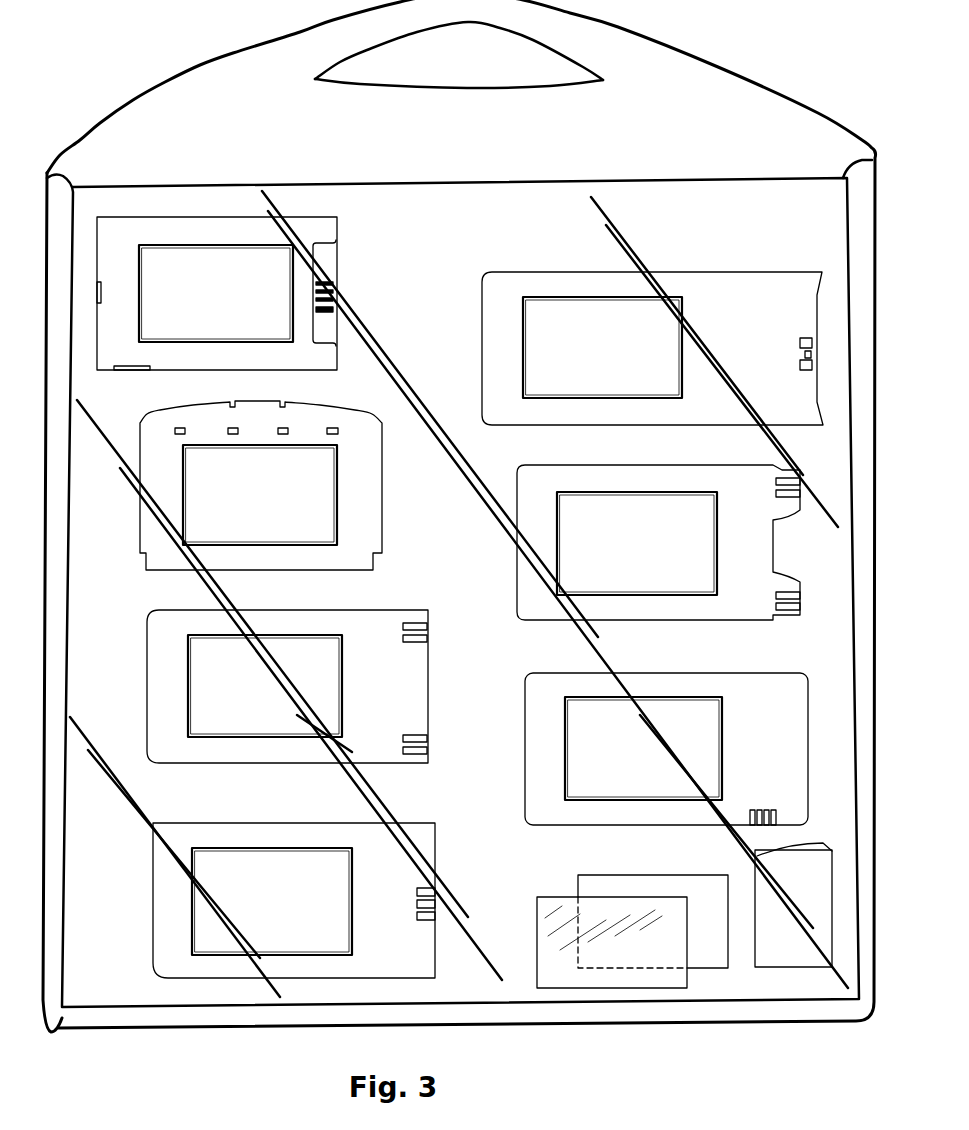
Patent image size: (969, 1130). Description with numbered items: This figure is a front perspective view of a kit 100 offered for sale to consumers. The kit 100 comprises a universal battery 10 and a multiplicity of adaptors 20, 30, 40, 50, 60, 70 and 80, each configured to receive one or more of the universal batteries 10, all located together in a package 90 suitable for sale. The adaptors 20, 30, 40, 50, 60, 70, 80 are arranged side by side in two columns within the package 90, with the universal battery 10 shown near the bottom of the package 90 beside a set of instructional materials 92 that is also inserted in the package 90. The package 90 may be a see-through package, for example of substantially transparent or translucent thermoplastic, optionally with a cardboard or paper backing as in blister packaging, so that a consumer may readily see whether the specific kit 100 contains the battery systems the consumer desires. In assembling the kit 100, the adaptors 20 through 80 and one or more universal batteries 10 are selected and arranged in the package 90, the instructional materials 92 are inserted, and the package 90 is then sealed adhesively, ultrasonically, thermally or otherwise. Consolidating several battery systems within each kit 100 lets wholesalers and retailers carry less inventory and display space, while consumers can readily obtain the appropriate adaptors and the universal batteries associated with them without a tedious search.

The universal battery 10 is at (572, 881).
The adaptor 20 is at (343, 265).
The adaptor 30 is at (396, 495).
The adaptor 40 is at (438, 684).
The adaptor 50 is at (478, 376).
The adaptor 60 is at (532, 626).
The adaptor 70 is at (516, 797).
The adaptor 80 is at (446, 943).
The package 90 is at (441, 1002).
The instructional materials 92 is at (793, 968).
The kit 100 is at (548, 1014).